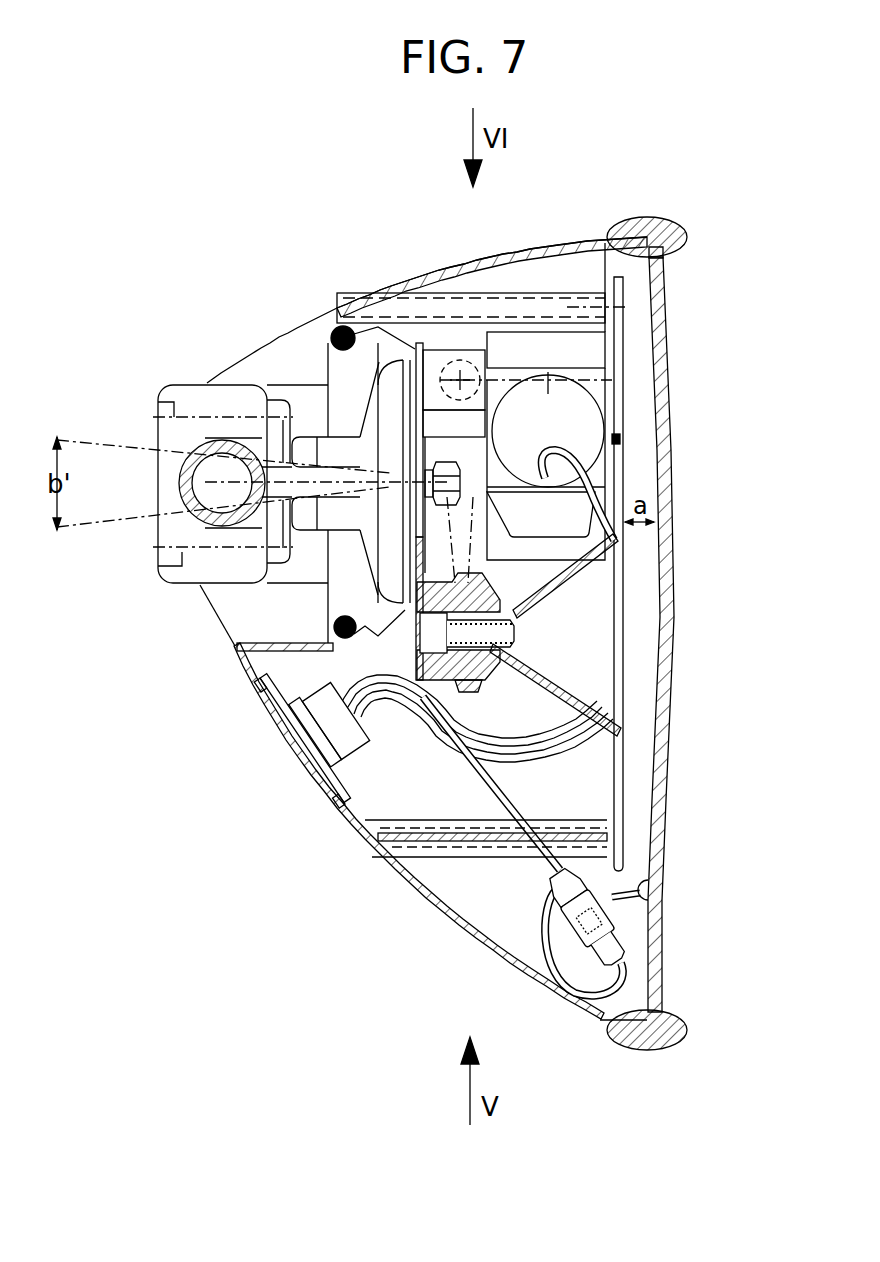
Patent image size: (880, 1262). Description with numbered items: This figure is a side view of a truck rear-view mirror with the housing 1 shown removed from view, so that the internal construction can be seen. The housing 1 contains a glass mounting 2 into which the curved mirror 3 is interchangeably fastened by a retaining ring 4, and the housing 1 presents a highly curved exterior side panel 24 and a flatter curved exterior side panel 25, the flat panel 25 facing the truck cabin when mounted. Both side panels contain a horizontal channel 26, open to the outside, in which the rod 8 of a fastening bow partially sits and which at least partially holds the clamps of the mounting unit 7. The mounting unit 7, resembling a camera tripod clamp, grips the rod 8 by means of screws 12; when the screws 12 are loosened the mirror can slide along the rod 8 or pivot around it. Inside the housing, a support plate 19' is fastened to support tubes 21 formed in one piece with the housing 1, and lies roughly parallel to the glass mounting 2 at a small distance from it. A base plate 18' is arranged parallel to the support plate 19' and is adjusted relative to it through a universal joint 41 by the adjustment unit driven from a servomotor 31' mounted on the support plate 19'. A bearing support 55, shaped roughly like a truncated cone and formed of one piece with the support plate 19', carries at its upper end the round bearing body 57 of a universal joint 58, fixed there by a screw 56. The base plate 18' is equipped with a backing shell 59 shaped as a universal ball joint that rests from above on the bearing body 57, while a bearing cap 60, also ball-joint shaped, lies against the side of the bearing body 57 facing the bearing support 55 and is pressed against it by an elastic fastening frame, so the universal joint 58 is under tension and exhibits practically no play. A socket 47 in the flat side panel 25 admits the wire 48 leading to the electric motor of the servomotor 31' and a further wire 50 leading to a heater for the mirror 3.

The housing 1 is at (350, 268).
The glass mounting 2 is at (640, 226).
The curved mirror 3 is at (666, 323).
The retaining ring 4 is at (684, 240).
The mounting unit 7 is at (150, 375).
The rod 8 is at (215, 447).
The screws 12 is at (153, 401).
The base plate 18' is at (397, 411).
The support plate 19' is at (689, 574).
The support tubes 21 is at (484, 858).
The highly curved exterior side panel 24 is at (521, 252).
The flat curved exterior side panel 25 is at (402, 878).
The horizontal channel 26 is at (242, 618).
The servomotor 31' is at (688, 441).
The universal joint 41 is at (445, 350).
The socket 47 is at (300, 742).
The wire 48 is at (543, 743).
The wire 50 is at (630, 938).
The bearing support 55 is at (600, 660).
The screw 56 is at (514, 633).
The bearing body 57 is at (446, 683).
The universal joint 58 is at (500, 652).
The backing shell 59 is at (416, 668).
The bearing cap 60 is at (475, 688).